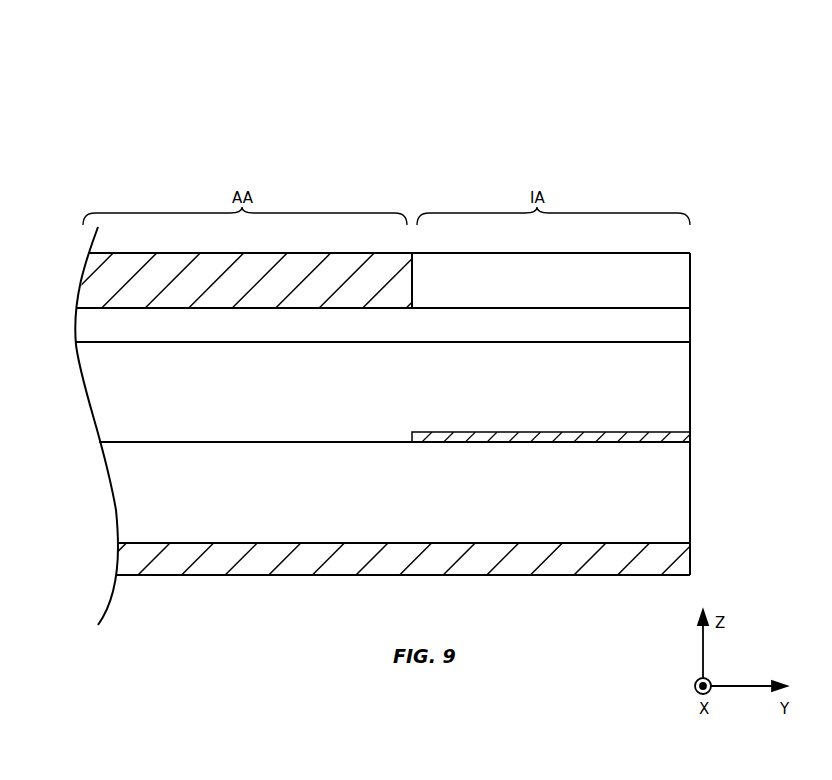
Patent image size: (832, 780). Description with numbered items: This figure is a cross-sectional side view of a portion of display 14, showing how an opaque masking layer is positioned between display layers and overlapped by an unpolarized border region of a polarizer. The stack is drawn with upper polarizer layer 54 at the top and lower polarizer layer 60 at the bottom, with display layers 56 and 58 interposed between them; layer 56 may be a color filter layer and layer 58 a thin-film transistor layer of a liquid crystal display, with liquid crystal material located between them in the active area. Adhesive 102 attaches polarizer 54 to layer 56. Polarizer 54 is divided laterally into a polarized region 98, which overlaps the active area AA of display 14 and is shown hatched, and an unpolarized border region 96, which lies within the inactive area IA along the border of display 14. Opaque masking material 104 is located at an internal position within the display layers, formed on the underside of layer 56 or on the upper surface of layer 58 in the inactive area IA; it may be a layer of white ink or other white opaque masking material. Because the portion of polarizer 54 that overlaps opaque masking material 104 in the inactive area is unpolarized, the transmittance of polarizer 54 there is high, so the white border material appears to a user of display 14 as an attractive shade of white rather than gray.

The display 14 is at (668, 95).
The upper polarizer layer 54 is at (700, 253).
The display layer 56 is at (683, 395).
The display layer 58 is at (683, 492).
The lower polarizer layer 60 is at (683, 558).
The unpolarized border region 96 is at (640, 262).
The polarized region 98 is at (303, 262).
The adhesive 102 is at (88, 325).
The opaque masking material 104 is at (690, 437).